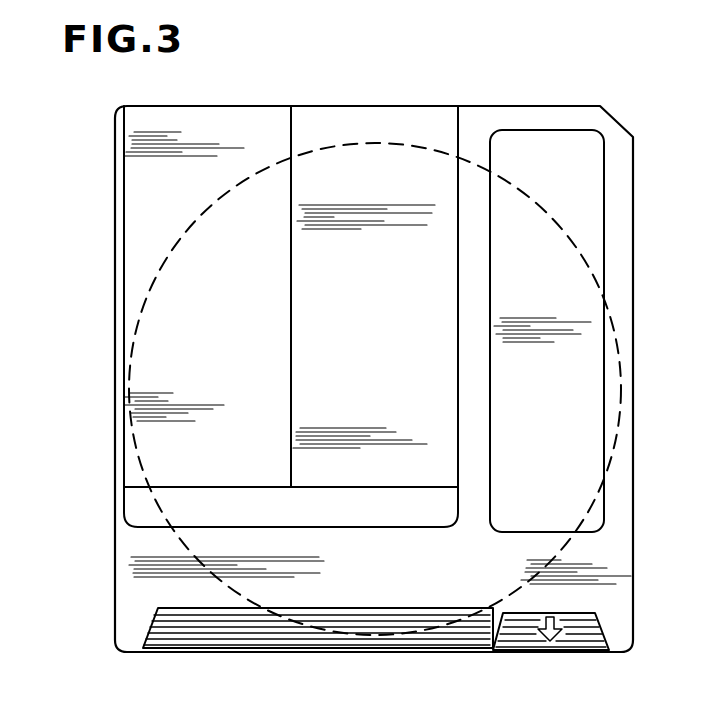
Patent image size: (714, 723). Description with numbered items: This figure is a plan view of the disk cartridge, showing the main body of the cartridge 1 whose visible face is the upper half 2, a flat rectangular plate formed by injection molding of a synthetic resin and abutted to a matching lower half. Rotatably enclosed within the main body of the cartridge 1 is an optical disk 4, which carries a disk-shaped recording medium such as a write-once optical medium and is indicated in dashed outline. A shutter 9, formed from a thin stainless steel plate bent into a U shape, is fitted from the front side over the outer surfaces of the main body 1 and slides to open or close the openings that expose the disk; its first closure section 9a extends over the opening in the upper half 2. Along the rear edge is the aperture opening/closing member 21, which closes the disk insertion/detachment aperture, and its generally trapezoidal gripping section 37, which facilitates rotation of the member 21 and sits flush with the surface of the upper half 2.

The main body of the cartridge 1 is at (334, 379).
The upper half 2 is at (128, 182).
The optical disk 4 is at (125, 337).
The shutter 9 is at (341, 118).
The first closure section 9a is at (423, 118).
The aperture opening/closing member 21 is at (580, 643).
The gripping section 37 is at (530, 640).